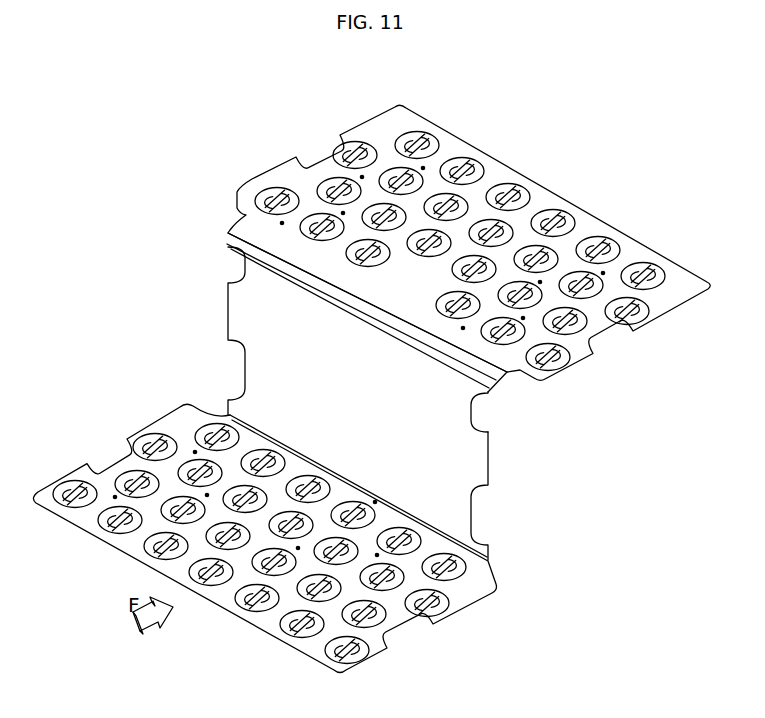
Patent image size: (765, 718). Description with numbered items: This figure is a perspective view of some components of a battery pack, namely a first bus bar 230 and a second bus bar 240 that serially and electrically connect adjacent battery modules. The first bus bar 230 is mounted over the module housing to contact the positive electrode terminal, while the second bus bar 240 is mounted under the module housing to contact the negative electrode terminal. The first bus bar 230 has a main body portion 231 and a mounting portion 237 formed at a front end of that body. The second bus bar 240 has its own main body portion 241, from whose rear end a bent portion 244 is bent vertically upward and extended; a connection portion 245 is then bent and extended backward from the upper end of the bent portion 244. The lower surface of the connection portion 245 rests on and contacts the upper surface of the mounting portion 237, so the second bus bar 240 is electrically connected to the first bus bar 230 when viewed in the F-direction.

The first bus bar 230 is at (469, 220).
The main body portion 231 is at (423, 128).
The mounting portion 237 is at (503, 383).
The second bus bar 240 is at (264, 515).
The main body portion 241 is at (88, 478).
The bent portion 244 is at (352, 403).
The connection portion 245 is at (248, 224).